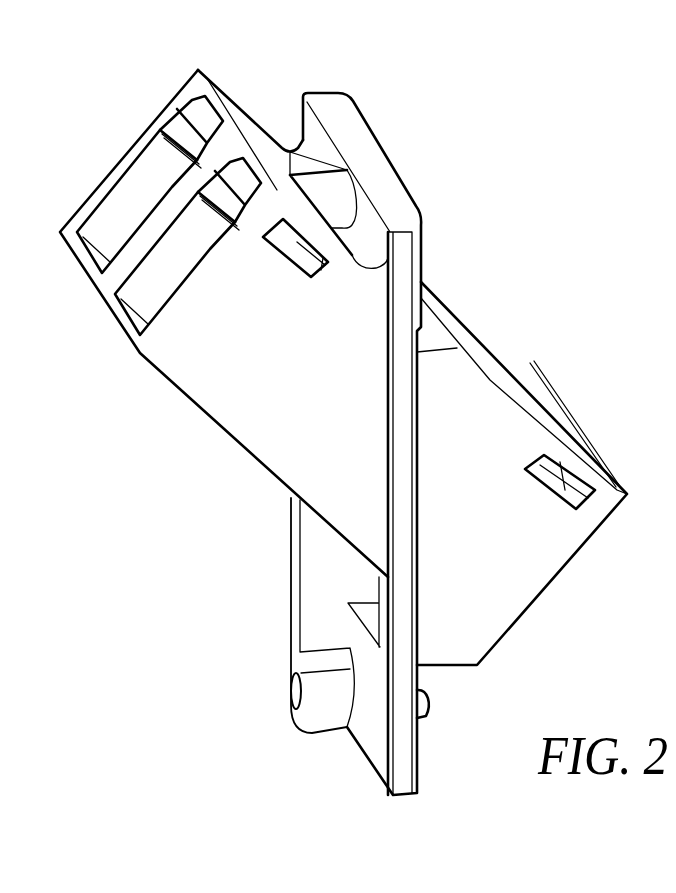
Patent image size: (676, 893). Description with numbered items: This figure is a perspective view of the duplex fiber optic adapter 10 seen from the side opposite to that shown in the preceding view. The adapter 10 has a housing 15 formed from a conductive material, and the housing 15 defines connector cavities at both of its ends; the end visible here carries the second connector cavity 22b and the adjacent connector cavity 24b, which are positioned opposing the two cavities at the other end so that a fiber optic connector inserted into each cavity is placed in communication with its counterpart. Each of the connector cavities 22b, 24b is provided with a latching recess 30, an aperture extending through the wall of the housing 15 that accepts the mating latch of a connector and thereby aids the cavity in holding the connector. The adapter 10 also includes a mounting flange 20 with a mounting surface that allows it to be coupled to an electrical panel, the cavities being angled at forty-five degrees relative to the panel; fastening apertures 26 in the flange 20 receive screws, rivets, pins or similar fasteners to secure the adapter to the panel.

The duplex fiber optic adapter 10 is at (400, 70).
The mounting flange 20 is at (419, 255).
The housing 15 is at (487, 330).
The second connector cavity 22b is at (160, 287).
The connector cavity 24b is at (128, 218).
The latching recesses 30 is at (325, 268).
The fastening apertures 26 is at (287, 697).